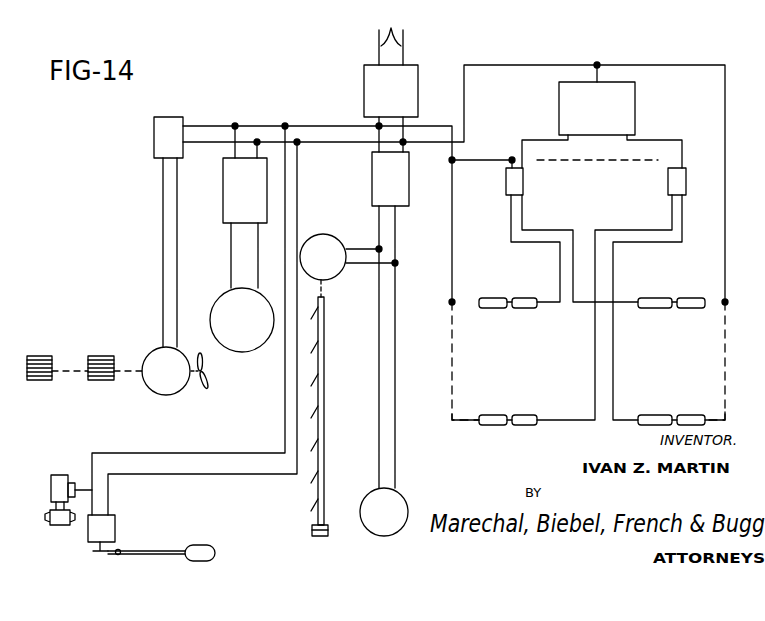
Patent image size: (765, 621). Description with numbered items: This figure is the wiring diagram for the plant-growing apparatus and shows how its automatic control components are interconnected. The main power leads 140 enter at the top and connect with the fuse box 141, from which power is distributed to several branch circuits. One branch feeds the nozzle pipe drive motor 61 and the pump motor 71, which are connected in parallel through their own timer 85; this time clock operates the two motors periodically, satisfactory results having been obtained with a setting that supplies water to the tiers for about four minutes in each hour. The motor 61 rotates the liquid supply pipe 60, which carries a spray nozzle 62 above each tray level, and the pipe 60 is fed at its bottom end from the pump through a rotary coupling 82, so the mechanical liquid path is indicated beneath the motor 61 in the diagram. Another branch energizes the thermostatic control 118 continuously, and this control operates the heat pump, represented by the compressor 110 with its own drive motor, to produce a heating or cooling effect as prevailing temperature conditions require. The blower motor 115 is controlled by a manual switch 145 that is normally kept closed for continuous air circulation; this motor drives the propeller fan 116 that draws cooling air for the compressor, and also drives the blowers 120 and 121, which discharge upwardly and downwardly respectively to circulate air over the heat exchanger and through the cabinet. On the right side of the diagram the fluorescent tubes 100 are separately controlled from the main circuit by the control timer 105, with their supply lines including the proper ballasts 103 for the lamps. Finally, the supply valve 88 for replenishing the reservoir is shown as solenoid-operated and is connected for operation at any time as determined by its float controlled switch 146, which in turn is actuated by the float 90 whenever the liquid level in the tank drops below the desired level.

The main power leads 140 is at (394, 35).
The fuse box 141 is at (378, 101).
The manual switch 145 is at (154, 140).
The thermostatic control 118 is at (232, 197).
The compressor 110 is at (229, 332).
The timer 85 is at (371, 175).
The control timer 105 is at (558, 94).
The ballasts 103 is at (524, 182).
The fluorescent tube 100 is at (520, 415).
The drive motor 61 is at (324, 234).
The liquid supply pipe 60 is at (323, 400).
The spray nozzle 62 is at (318, 349).
The rotary coupling 82 is at (311, 531).
The pump motor 71 is at (373, 532).
The motor 115 is at (165, 395).
The propeller fan 116 is at (206, 384).
The blower 120 is at (41, 362).
The blower 121 is at (100, 362).
The solenoid valve 88 is at (58, 476).
The float controlled switch 146 is at (117, 530).
The float 90 is at (205, 548).